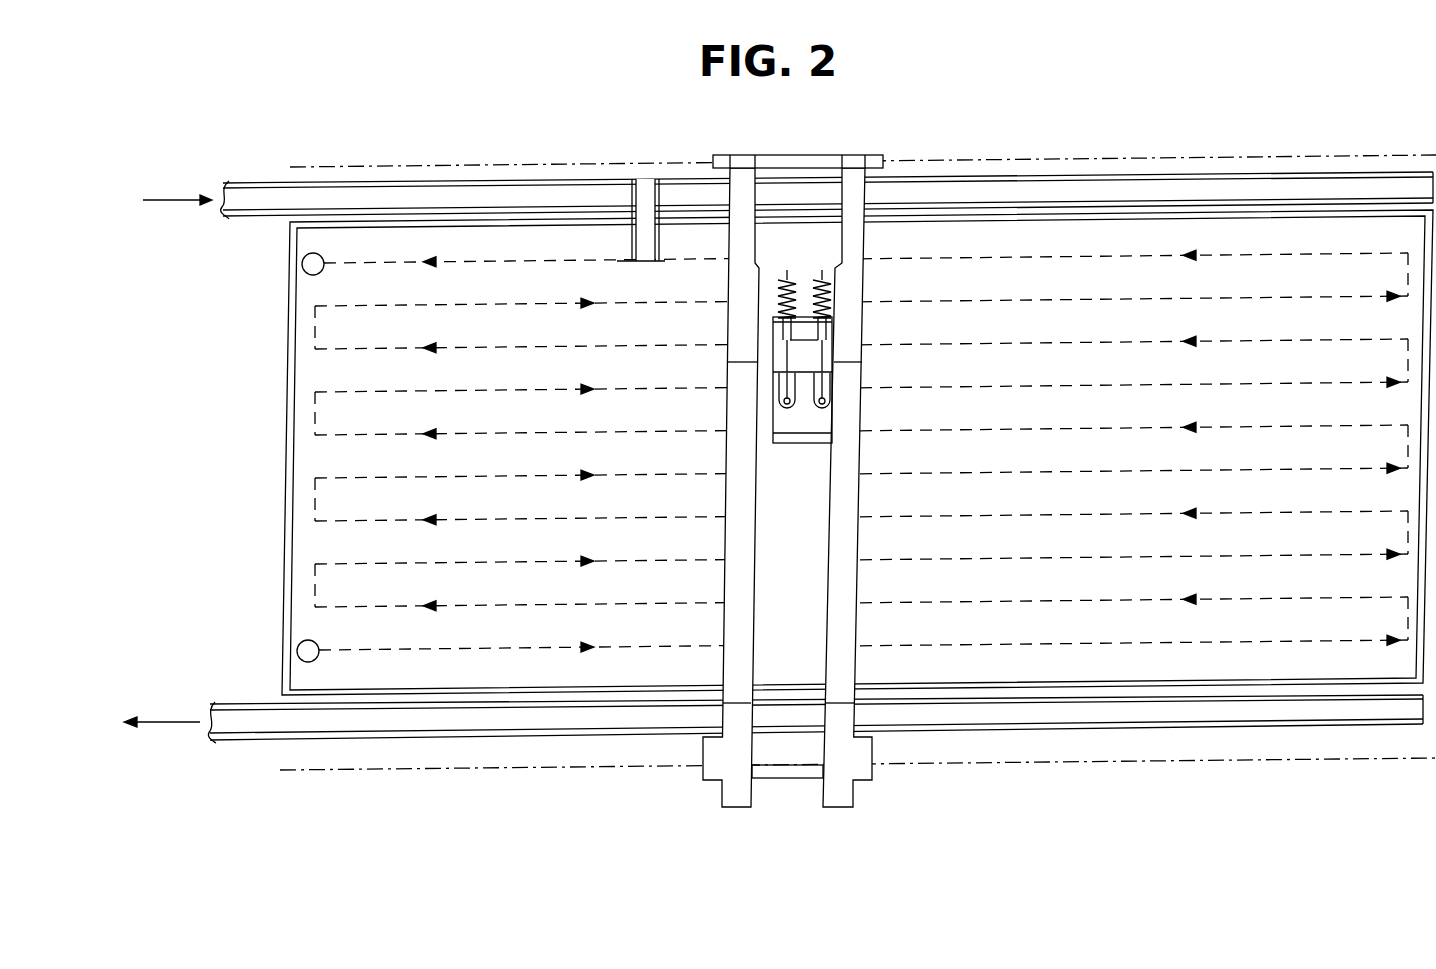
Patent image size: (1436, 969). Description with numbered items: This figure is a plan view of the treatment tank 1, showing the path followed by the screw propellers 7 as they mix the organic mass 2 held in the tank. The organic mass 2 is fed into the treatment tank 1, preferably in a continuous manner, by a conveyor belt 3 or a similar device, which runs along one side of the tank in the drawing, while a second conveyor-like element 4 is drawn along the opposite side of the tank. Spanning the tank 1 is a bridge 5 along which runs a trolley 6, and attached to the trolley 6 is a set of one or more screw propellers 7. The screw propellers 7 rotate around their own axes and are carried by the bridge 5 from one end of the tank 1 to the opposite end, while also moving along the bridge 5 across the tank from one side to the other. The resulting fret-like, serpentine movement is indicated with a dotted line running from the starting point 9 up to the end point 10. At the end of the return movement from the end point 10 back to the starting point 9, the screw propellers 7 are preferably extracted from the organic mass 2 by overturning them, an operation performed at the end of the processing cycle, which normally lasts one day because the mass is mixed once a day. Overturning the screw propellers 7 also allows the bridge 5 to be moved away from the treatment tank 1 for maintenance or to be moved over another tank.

The treatment tank 1 is at (290, 450).
The organic mass 2 is at (1010, 647).
The conveyor belt 3 is at (262, 202).
The outlet pipe 4 is at (263, 723).
The bridge 5 is at (748, 195).
The trolley 6 is at (797, 422).
The screw propellers 7 is at (785, 283).
The starting point 9 is at (297, 645).
The end point 10 is at (290, 268).